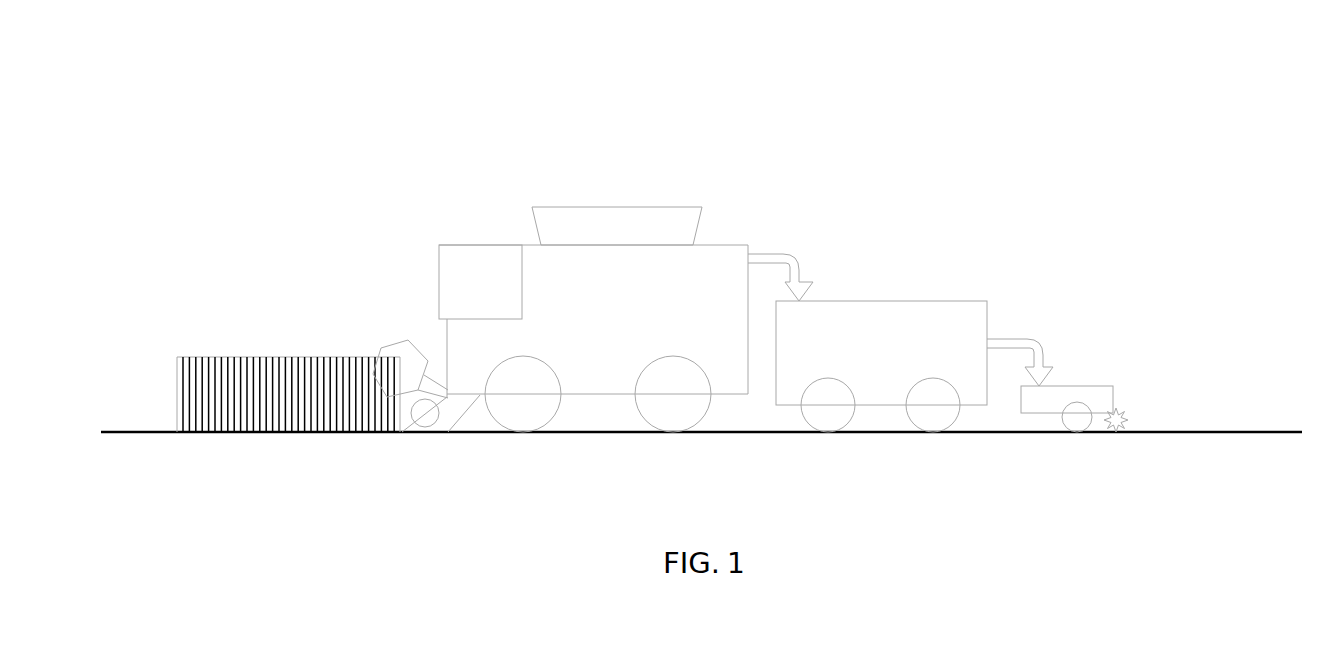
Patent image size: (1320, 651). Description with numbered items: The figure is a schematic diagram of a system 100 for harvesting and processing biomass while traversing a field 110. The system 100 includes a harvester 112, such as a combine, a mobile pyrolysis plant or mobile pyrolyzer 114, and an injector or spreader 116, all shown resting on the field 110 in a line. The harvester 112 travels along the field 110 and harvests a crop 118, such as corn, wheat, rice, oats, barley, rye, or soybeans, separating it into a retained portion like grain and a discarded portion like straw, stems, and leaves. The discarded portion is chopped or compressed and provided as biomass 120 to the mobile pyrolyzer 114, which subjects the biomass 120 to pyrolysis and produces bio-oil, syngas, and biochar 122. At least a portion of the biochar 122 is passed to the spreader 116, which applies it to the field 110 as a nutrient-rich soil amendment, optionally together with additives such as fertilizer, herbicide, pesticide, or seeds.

The system 100 is at (965, 93).
The field 110 is at (1226, 431).
The harvester 112 is at (618, 346).
The mobile pyrolyzer 114 is at (903, 380).
The spreader 116 is at (1086, 386).
The crop 118 is at (260, 357).
The biomass 120 is at (782, 254).
The biochar 122 is at (1027, 339).